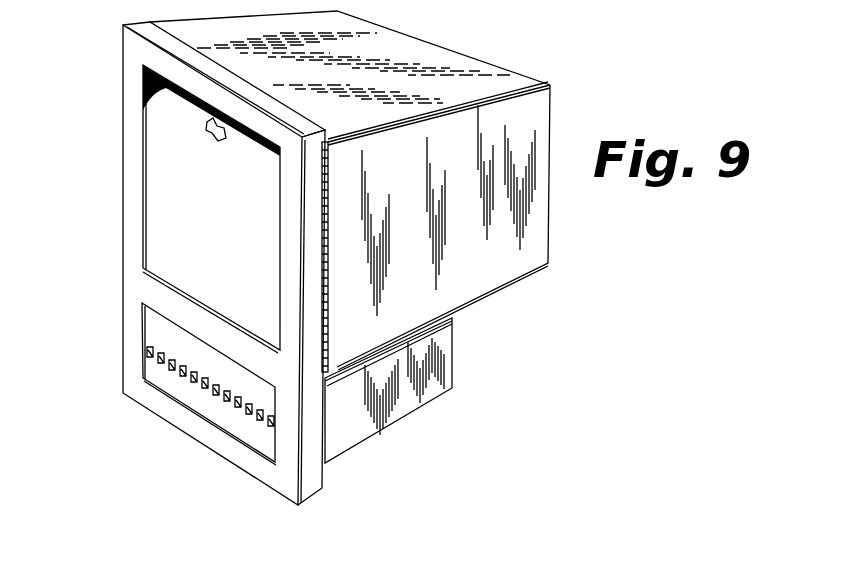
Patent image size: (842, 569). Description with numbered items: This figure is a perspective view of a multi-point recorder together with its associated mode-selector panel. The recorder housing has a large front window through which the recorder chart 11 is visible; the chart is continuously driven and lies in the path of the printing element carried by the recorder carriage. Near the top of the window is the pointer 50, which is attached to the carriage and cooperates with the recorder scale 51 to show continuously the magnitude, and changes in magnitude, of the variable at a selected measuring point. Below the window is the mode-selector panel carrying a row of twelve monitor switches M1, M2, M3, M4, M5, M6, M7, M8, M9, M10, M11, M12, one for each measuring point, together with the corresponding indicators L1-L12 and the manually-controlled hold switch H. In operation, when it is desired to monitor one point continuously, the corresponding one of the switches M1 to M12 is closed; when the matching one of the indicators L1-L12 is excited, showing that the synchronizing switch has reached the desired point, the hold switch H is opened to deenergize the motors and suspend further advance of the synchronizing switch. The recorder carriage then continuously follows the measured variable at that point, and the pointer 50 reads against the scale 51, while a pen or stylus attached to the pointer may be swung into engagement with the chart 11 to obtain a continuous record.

The recorder chart 11 is at (165, 217).
The pointer 50 is at (217, 133).
The recorder scale 51 is at (160, 80).
The hold switch H is at (222, 398).
The indicators L1-L12 is at (152, 324).
The monitor switch M1 is at (147, 352).
The monitor switch M2 is at (158, 359).
The monitor switch M3 is at (169, 365).
The monitor switch M4 is at (180, 371).
The monitor switch M5 is at (191, 378).
The monitor switch M6 is at (202, 384).
The monitor switch M7 is at (213, 391).
The monitor switch M8 is at (225, 397).
The monitor switch M9 is at (236, 403).
The monitor switch M10 is at (247, 410).
The monitor switch M11 is at (258, 416).
The monitor switch M12 is at (269, 422).